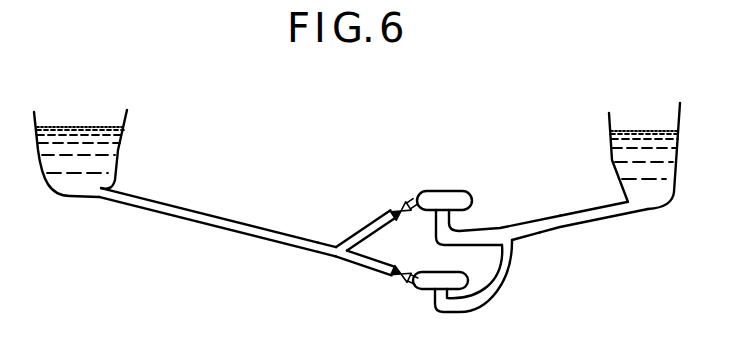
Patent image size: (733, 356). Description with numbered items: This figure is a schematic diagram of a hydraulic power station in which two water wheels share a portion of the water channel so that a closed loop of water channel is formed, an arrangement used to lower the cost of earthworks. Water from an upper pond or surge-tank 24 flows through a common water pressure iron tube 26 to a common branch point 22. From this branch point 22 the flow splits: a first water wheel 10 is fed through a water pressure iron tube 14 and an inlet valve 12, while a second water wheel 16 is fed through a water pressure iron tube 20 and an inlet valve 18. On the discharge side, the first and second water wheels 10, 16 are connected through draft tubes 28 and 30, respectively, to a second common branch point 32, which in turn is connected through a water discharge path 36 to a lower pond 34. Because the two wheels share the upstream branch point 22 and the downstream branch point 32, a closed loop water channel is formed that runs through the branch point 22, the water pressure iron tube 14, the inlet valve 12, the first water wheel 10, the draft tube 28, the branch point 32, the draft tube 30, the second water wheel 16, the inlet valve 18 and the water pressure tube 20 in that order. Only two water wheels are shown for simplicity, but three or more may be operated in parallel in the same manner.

The first water wheel 10 is at (442, 191).
The inlet valve 12 is at (397, 206).
The water pressure iron tube 14 is at (357, 234).
The second water wheel 16 is at (437, 272).
The inlet valve 18 is at (400, 282).
The water pressure iron tube 20 is at (355, 263).
The common branch point 22 is at (328, 257).
The upper pond or surge-tank 24 is at (128, 139).
The common water pressure iron tube 26 is at (201, 214).
The draft tube 28 is at (499, 224).
The draft tube 30 is at (493, 299).
The common branch point 32 is at (514, 246).
The lower pond 34 is at (611, 150).
The water discharge path 36 is at (585, 226).